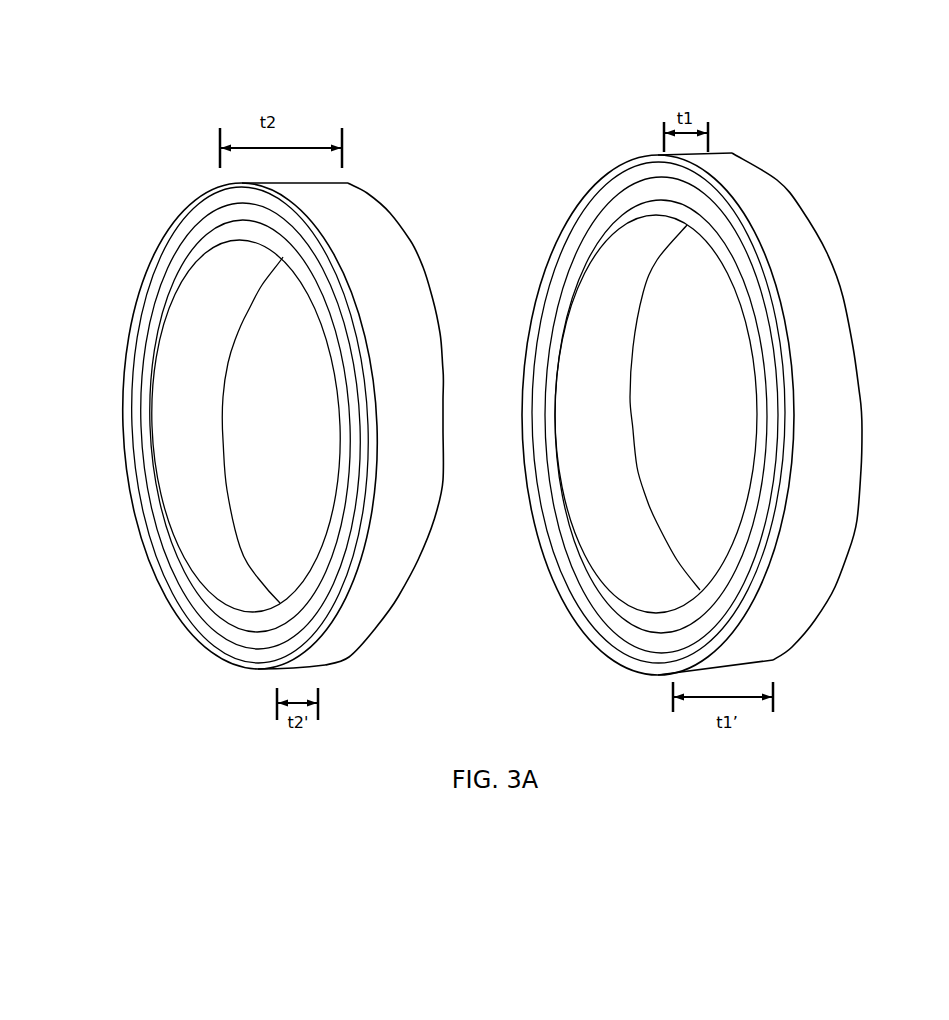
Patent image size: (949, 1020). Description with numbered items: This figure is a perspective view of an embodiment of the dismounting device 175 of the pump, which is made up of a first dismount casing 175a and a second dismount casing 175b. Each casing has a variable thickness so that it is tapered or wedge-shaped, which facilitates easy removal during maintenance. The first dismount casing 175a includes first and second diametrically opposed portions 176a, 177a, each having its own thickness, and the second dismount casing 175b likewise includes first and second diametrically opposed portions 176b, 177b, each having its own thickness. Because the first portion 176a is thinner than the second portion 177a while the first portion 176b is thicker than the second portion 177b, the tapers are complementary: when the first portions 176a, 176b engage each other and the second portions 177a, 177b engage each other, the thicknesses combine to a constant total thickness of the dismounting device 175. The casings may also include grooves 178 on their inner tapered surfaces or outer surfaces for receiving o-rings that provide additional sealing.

The dismounting device 175 is at (507, 113).
The first dismount casing 175a is at (853, 152).
The second dismount casing 175b is at (447, 190).
The first portion of the first dismount casing 176a is at (730, 153).
The first portion of the second dismount casing 176b is at (348, 185).
The second portion of the first dismount casing 177a is at (777, 658).
The second portion of the second dismount casing 177b is at (323, 665).
The grooves 178 is at (173, 205).